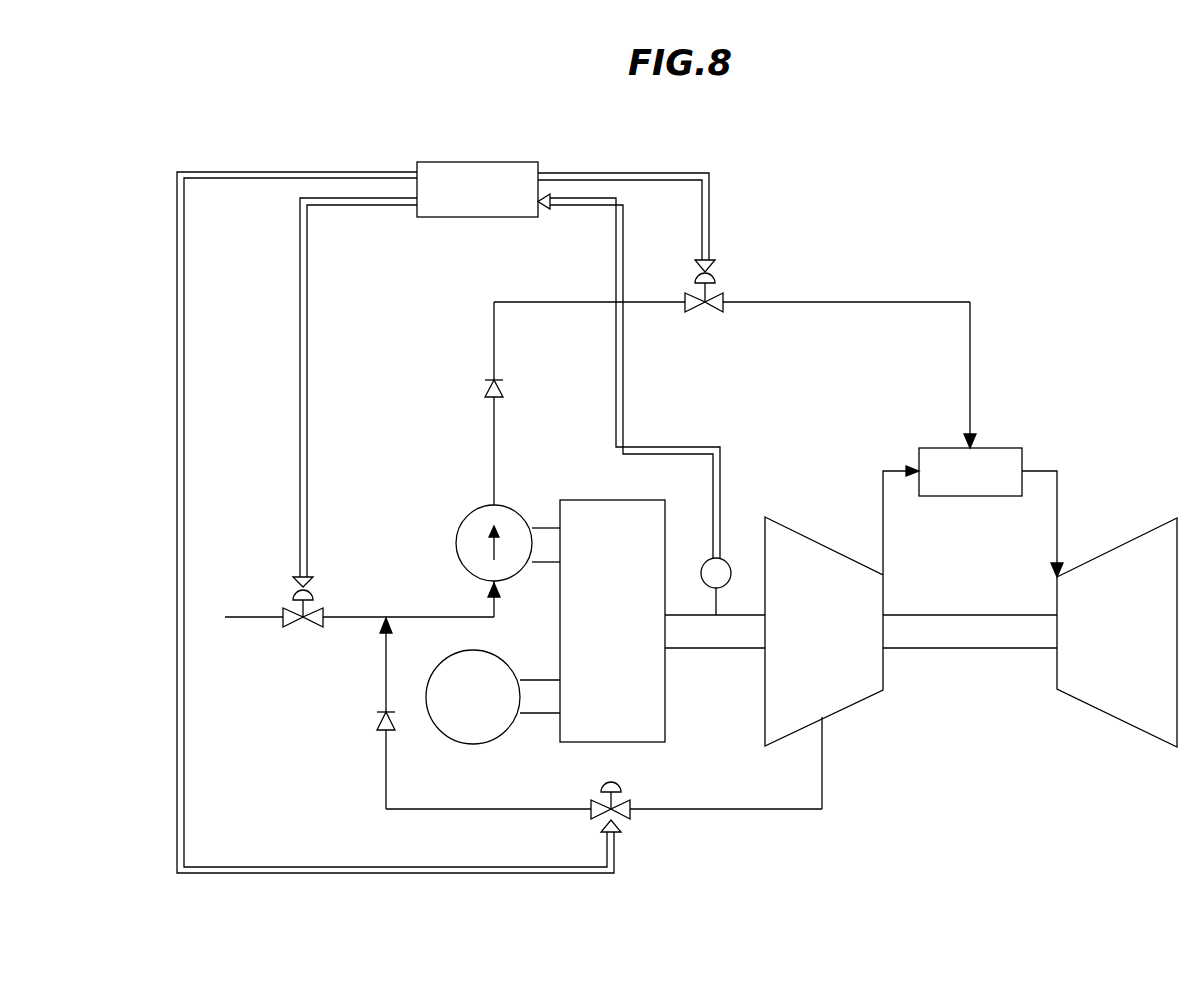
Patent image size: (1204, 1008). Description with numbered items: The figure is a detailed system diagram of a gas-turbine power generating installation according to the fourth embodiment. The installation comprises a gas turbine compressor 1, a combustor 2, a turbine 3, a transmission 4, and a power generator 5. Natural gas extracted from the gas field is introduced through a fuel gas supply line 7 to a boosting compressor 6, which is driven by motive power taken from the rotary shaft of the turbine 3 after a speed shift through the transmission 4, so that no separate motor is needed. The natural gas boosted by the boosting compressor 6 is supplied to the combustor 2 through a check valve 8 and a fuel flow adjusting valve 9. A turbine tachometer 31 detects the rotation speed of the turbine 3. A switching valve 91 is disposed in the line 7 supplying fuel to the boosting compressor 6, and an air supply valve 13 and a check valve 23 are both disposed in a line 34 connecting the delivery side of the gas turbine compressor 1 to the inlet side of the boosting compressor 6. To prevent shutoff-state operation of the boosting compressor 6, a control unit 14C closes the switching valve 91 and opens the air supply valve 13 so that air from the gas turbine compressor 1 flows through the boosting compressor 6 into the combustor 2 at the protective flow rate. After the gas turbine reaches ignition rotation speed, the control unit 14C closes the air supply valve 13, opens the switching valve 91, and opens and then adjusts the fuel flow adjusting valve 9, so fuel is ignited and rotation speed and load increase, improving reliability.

The control unit 14C is at (482, 161).
The fuel flow adjusting valve 9 is at (714, 314).
The combustor 2 is at (1003, 448).
The gas turbine compressor 1 is at (822, 545).
The turbine 3 is at (1093, 708).
The turbine tachometer 31 is at (707, 559).
The transmission 4 is at (666, 710).
The power generator 5 is at (485, 743).
The boosting compressor 6 is at (482, 506).
The check valve 8 is at (498, 379).
The fuel gas supply line 7 is at (362, 615).
The switching valve 91 is at (306, 628).
The check valve 23 is at (378, 711).
The air supply valve 13 is at (628, 798).
The line 34 is at (737, 812).